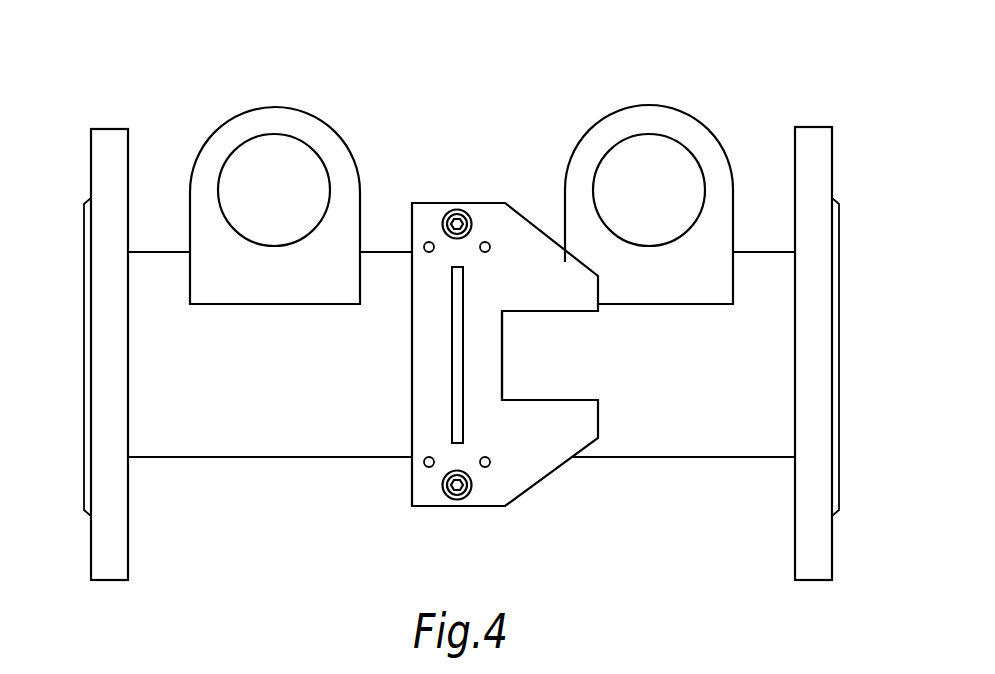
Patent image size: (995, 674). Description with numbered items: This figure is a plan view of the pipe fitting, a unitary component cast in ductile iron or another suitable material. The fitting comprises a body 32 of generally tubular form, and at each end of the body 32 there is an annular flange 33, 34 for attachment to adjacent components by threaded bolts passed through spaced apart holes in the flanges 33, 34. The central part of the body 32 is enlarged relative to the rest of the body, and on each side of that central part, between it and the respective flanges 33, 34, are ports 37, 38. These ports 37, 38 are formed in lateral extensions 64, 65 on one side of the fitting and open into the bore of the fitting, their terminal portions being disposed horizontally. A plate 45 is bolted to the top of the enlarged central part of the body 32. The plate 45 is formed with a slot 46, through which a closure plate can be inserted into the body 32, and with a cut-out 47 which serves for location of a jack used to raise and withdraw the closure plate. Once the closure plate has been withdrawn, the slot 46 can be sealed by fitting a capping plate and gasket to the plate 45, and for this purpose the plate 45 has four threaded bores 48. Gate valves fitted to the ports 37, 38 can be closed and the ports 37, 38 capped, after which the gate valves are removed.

The body 32 is at (223, 437).
The annular flange 33 is at (833, 160).
The annular flange 34 is at (90, 163).
The port 37 is at (248, 158).
The port 38 is at (672, 158).
The plate 45 is at (425, 410).
The slot 46 is at (462, 288).
The cut-out 47 is at (553, 356).
The threaded bores 48 is at (426, 242).
The lateral extension 64 is at (287, 122).
The lateral extension 65 is at (628, 122).